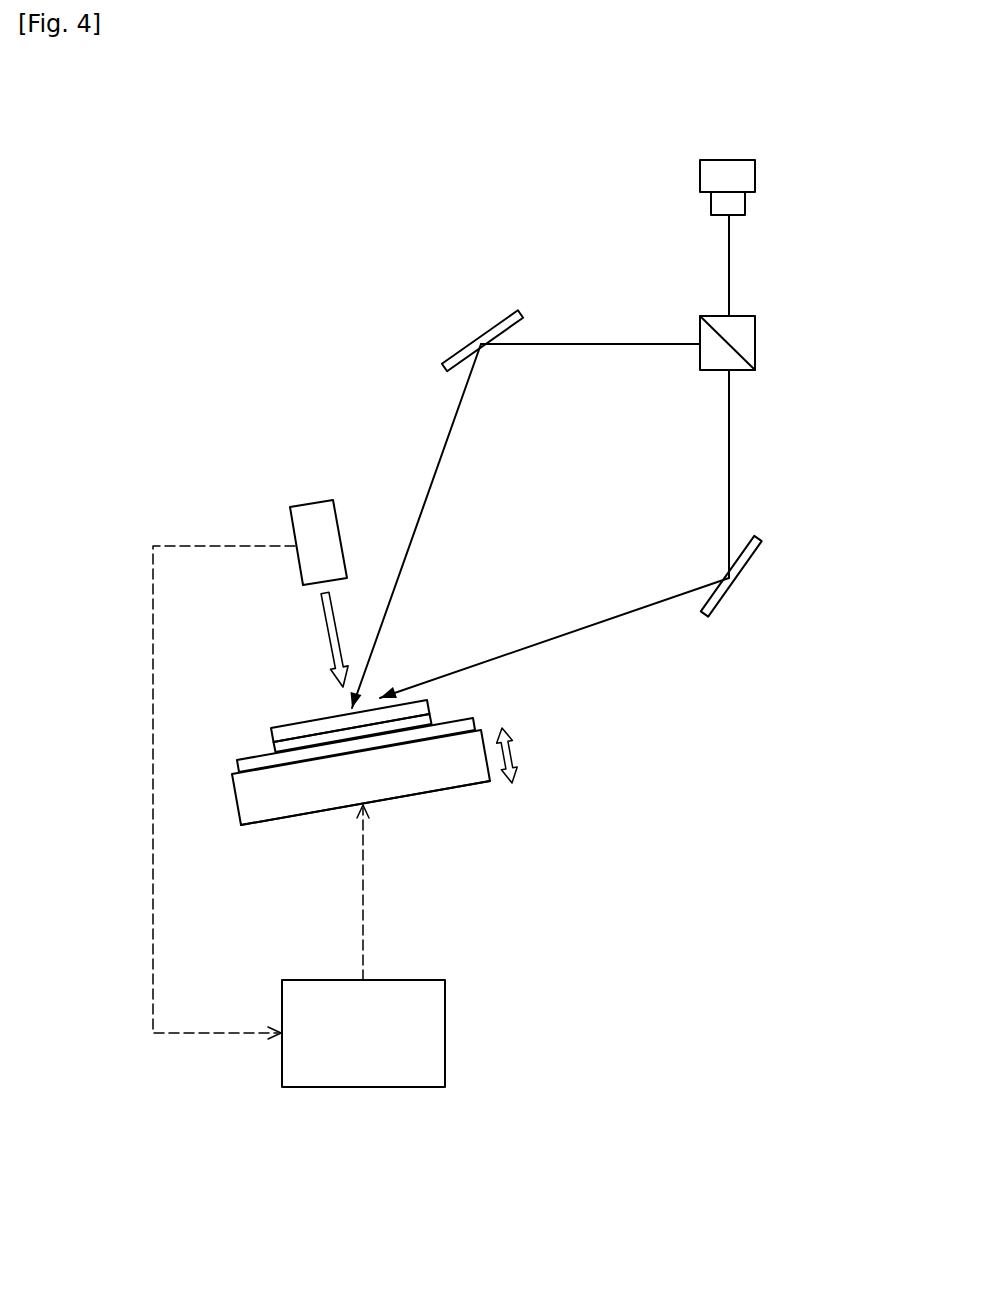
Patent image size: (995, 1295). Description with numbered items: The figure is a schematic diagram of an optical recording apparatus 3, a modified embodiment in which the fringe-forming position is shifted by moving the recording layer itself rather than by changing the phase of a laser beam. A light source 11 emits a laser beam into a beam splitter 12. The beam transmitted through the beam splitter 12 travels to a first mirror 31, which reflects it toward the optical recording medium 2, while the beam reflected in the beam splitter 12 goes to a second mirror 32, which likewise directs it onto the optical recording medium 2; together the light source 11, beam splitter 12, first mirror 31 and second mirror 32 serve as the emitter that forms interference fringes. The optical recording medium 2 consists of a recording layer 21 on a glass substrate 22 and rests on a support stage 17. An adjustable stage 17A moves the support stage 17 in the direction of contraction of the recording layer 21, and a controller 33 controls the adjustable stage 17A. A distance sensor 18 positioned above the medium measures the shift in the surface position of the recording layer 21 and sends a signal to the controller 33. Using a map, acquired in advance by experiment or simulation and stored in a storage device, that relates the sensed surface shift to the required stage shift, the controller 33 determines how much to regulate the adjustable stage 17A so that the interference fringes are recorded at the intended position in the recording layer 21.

The optical recording apparatus 3 is at (274, 177).
The light source 11 is at (755, 176).
The beam splitter 12 is at (755, 343).
The first mirror 31 is at (750, 574).
The second mirror 32 is at (499, 318).
The distance sensor 18 is at (310, 500).
The support stage 17 is at (473, 722).
The adjustable stage 17A is at (285, 817).
The optical recording medium 2 is at (296, 736).
The recording layer 21 is at (272, 735).
The glass substrate 22 is at (272, 748).
The controller 33 is at (363, 1087).